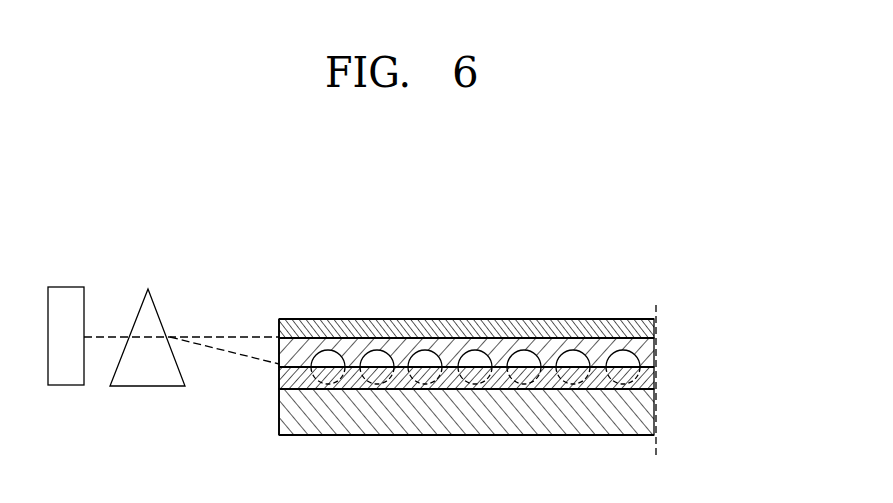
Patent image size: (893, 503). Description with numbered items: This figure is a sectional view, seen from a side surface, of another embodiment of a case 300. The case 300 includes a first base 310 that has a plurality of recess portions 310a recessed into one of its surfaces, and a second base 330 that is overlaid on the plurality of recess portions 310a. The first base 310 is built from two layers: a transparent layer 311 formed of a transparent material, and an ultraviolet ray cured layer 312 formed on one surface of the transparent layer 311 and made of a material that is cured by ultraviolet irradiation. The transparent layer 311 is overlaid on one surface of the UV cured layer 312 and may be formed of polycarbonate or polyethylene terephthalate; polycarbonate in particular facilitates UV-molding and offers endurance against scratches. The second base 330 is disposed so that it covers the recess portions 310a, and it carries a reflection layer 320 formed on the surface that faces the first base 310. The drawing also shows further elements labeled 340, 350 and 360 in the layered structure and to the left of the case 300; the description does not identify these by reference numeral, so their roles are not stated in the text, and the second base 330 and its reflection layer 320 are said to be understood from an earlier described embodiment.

The case 300 is at (322, 262).
The first base 310 is at (743, 305).
The transparent layer 311 is at (656, 328).
The ultraviolet ray (UV) cured layer 312 is at (654, 345).
The recess portions 310a is at (575, 349).
The lens array 340 is at (523, 323).
The reflection layer 320 is at (656, 383).
The second base 330 is at (656, 417).
The light source 350 is at (66, 376).
The prism 360 is at (151, 376).